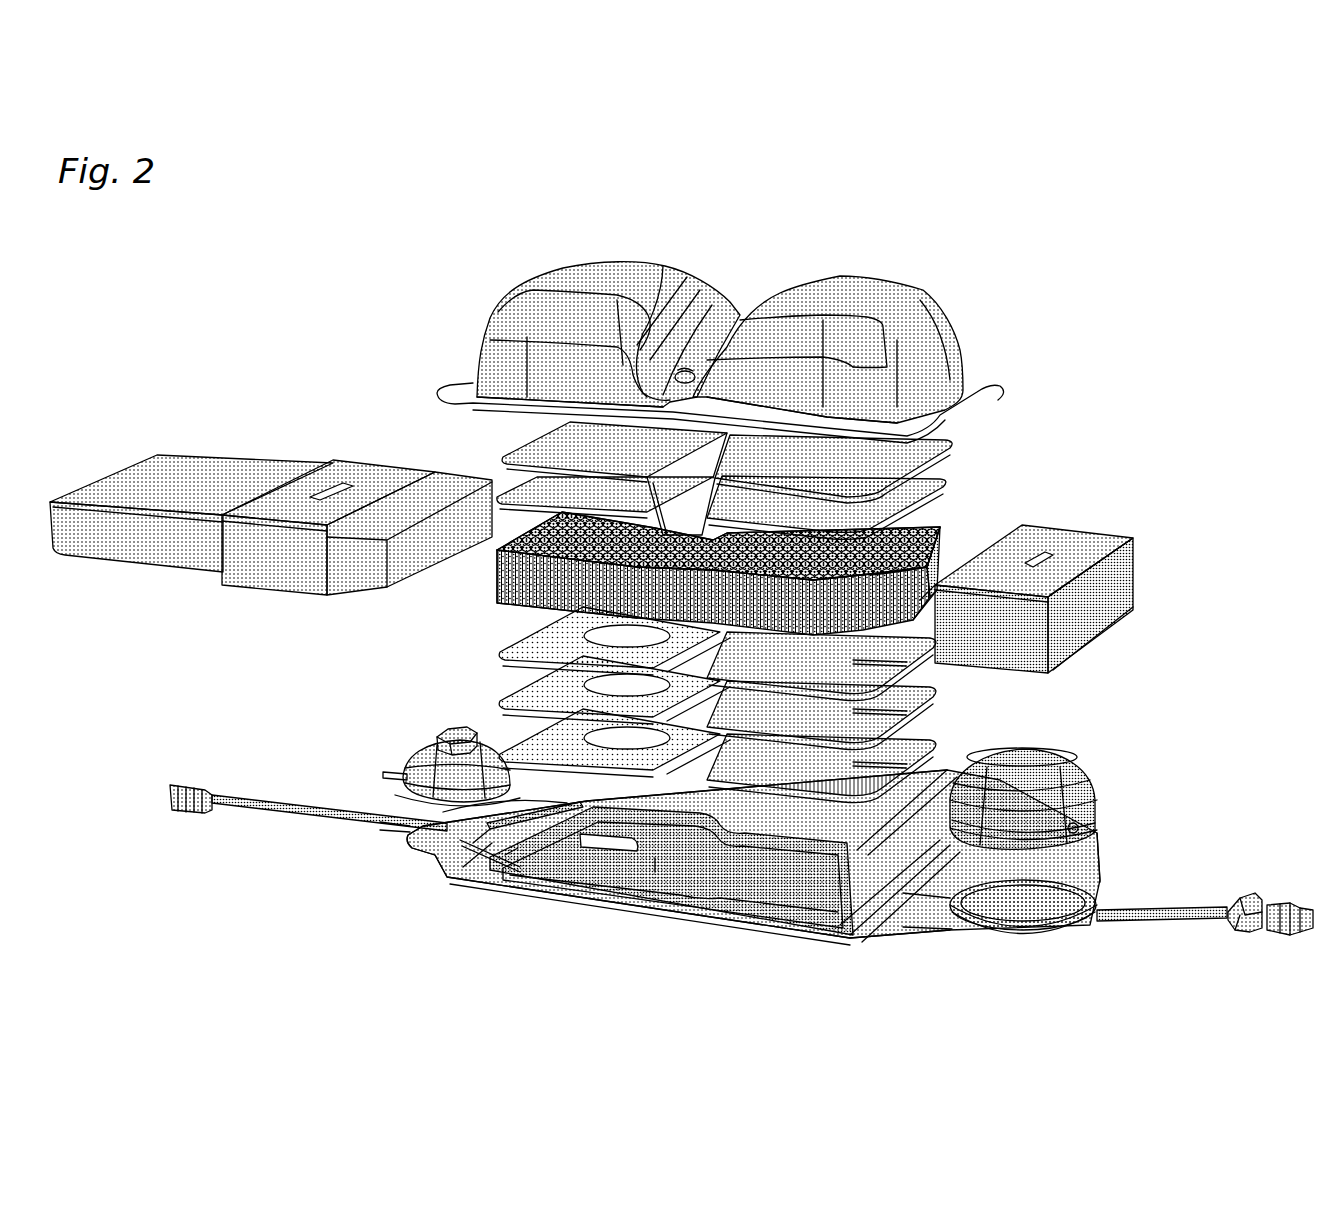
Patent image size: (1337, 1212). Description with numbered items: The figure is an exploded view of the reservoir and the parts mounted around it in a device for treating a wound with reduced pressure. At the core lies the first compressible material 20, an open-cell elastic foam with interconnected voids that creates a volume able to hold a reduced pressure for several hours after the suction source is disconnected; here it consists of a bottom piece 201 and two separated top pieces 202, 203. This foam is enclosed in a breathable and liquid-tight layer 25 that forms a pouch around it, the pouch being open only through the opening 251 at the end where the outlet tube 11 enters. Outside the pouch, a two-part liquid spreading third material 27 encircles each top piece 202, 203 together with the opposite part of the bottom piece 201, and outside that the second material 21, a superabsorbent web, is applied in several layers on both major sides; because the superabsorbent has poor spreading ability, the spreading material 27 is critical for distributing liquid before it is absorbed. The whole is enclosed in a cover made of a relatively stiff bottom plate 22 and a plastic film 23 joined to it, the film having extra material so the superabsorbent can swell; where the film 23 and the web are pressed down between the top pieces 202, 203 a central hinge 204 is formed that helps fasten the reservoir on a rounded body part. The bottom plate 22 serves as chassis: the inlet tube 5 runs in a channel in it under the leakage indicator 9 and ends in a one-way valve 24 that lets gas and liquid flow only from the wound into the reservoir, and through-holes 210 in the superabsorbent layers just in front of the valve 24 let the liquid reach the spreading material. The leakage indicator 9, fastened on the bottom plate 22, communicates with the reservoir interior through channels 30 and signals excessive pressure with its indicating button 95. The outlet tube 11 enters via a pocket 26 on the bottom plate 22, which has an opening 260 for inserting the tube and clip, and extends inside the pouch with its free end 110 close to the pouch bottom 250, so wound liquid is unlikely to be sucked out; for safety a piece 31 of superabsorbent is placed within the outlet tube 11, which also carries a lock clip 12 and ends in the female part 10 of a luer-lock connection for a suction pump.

The central hinge 204 is at (686, 372).
The plastic film 23 is at (925, 318).
The second material 21 is at (860, 510).
The first compressible material 20 is at (926, 530).
The top piece 203 is at (958, 533).
The bottom piece 201 is at (930, 588).
The top piece 202 is at (538, 512).
The bottom of the liquid-tight pouch 250 is at (117, 497).
The breathable and liquid-tight layer 25 is at (190, 478).
The third material 27 is at (390, 473).
The opening 251 is at (408, 563).
The indicating button 95 is at (447, 747).
The leakage indicator 9 is at (413, 775).
The inlet tube 5 is at (327, 818).
The channels 30 is at (490, 855).
The one-way valve 24 is at (610, 847).
The free end of the outlet tube 110 is at (653, 855).
The through-holes 210 is at (623, 740).
The pocket 26 is at (1053, 762).
The opening 260 is at (1078, 826).
The outlet tube 11 is at (1037, 910).
The piece of superabsorbent 31 is at (1150, 913).
The lock clip 12 is at (1242, 897).
The female part of a luer-lock connection 10 is at (1285, 932).
The bottom plate 22 is at (903, 923).